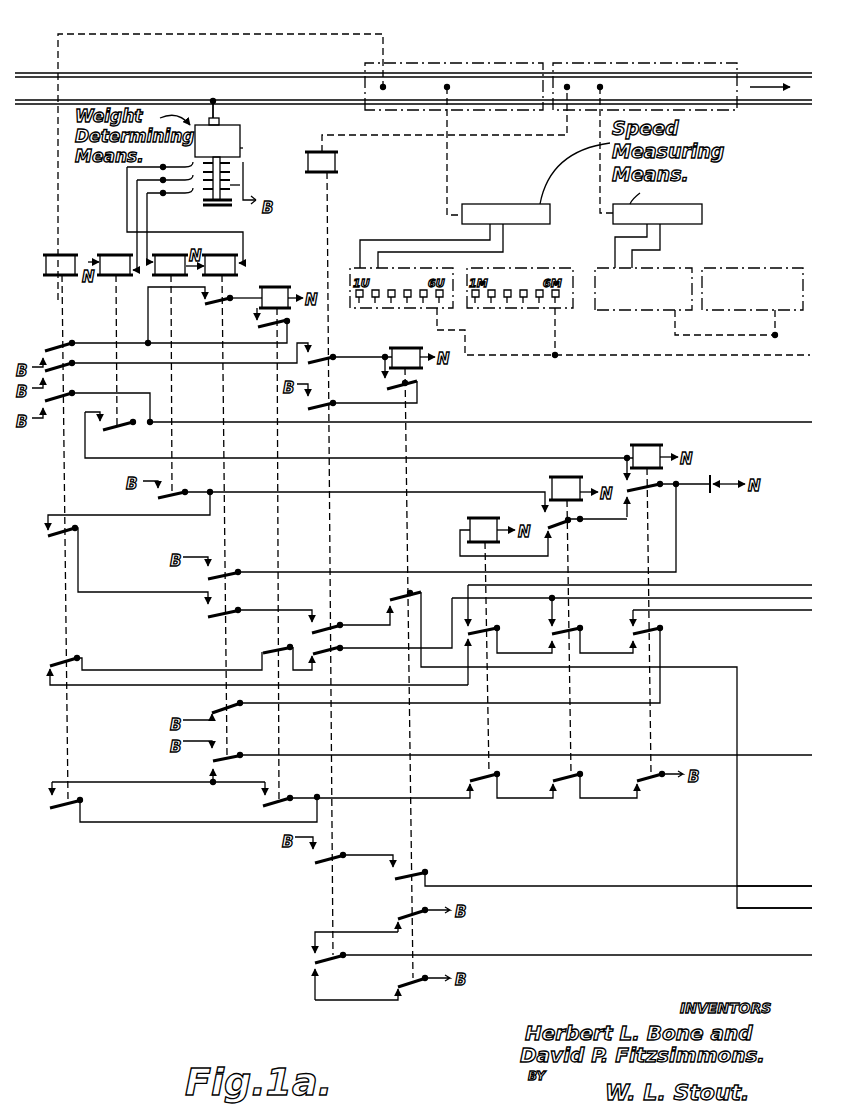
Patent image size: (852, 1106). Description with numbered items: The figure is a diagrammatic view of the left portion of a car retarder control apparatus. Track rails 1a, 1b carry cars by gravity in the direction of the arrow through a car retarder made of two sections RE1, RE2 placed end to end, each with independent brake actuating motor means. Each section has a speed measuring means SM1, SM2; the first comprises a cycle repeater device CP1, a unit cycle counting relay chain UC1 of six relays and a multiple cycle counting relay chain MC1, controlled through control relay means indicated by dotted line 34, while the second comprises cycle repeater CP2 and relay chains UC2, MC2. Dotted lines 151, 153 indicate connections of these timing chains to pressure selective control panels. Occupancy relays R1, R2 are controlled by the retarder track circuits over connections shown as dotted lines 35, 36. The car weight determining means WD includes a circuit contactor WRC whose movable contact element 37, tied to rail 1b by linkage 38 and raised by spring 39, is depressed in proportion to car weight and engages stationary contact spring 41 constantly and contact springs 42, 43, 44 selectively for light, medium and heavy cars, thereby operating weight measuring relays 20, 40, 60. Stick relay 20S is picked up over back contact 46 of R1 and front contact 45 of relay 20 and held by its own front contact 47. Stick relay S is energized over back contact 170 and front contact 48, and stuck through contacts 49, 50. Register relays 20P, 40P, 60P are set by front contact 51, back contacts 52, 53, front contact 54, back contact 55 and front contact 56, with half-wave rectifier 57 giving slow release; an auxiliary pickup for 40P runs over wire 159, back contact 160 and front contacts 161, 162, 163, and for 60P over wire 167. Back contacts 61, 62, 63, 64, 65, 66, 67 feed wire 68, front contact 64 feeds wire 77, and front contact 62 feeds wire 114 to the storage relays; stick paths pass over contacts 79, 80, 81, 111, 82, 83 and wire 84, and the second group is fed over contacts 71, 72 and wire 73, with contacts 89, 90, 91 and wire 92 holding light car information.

The track rail 1a is at (145, 69).
The track rail 1b is at (145, 97).
The control connection for relay R1 35 is at (238, 16).
The control connection for relay R2 36 is at (355, 132).
The control relay means connection 34 is at (445, 121).
The linkage 38 is at (220, 112).
The movable contact element 37 is at (240, 148).
The stationary contact spring 41 is at (244, 165).
The spring 39 is at (240, 185).
The stationary contact spring 42 is at (183, 163).
The stationary contact spring 43 is at (160, 218).
The stationary contact spring 44 is at (170, 225).
The front contact of relay 20 45 is at (213, 305).
The front contact of relay 20S 47 is at (264, 325).
The back contact of relay R1 46 is at (70, 330).
The back contact of relay R1 170 is at (70, 367).
The back contact of relay R1 55 is at (70, 394).
The front contact of relay 60 56 is at (359, 436).
The front contact of relay R2 48 is at (333, 356).
The front contact of relay R2 49 is at (332, 400).
The front contact of relay S 50 is at (410, 378).
The wire 167 is at (802, 418).
The connection to speed measuring means SM1 151 is at (793, 352).
The connection to speed measuring means SM2 153 is at (780, 318).
The half-wave rectifier 57 is at (712, 481).
The front contact of relay 40 54 is at (176, 490).
The contact of relay 40P 53 is at (563, 525).
The contact of relay 60P 52 is at (660, 487).
The front contact of relay R1 163 is at (52, 540).
The front contact of relay 20 51 is at (234, 573).
The front contact of relay 20 162 is at (232, 609).
The back contact of relay S 160 is at (392, 593).
The front contact of relay R2 161 is at (338, 622).
The wire 68 is at (750, 606).
The wire 77 is at (805, 575).
The back contact of relay 20S 66 is at (271, 645).
The back contact of relay R2 67 is at (340, 649).
The contact of relay 20P 64 is at (510, 635).
The back contact of relay 40P 63 is at (575, 627).
The contact of relay 60P 62 is at (656, 627).
The wire 114 is at (782, 612).
The back contact of relay R1 65 is at (55, 657).
The back contact of relay 20 61 is at (214, 704).
The contact of relay 20 83 is at (236, 757).
The wire 84 is at (790, 753).
The back contact of relay 20P 81 is at (471, 774).
The back contact of relay 40P 80 is at (550, 774).
The back contact of relay 60P 79 is at (634, 774).
The front contact of relay R1 82 is at (54, 810).
The front contact of relay 20S 111 is at (286, 797).
The front contact of relay R2 90 is at (340, 855).
The front contact of relay S 91 is at (423, 870).
The wire 92 is at (792, 885).
The wire 159 is at (808, 906).
The back contact of relay S 89 is at (405, 905).
The wire 73 is at (808, 952).
The contact of relay R2 72 is at (322, 963).
The back contact of relay S 71 is at (405, 976).
The occupancy relay R1 is at (53, 252).
The occupancy relay R2 is at (336, 153).
The weight measuring relay 60 is at (124, 249).
The weight measuring relay 40 is at (180, 249).
The weight measuring relay 20 is at (237, 249).
The stick relay 20S is at (280, 533).
The stick relay S is at (409, 652).
The register relay 60P is at (652, 598).
The register relay 40P is at (571, 614).
The register relay 20P is at (488, 635).
The car weight determining means WD is at (285, 146).
The circuit contactor WRC is at (217, 192).
The cycle repeater device CP1 is at (517, 200).
The cycle repeater CP2 is at (702, 220).
The speed measuring means SM1 is at (416, 225).
The speed measuring means SM2 is at (774, 220).
The unit cycle counting relay chain UC1 is at (436, 262).
The multiple cycle counting relay chain MC1 is at (512, 262).
The unit cycle counting relay chain UC2 is at (645, 264).
The multiple cycle counting relay chain MC2 is at (782, 263).
The retarder section RE1 is at (535, 50).
The retarder section RE2 is at (590, 62).